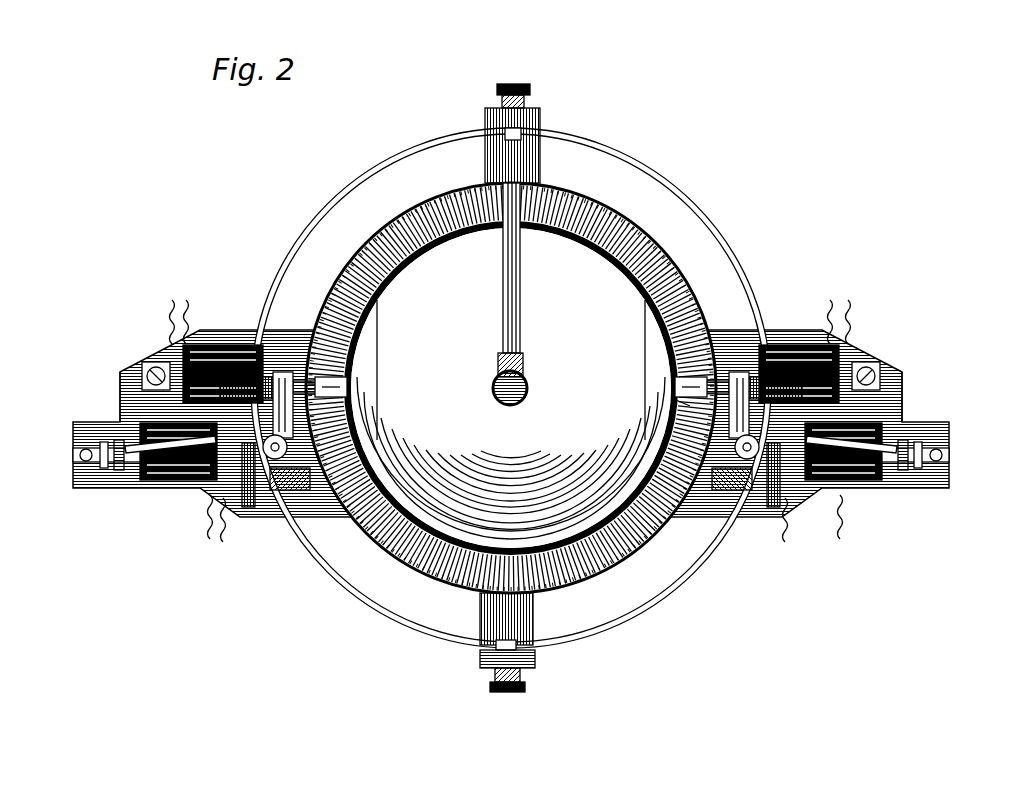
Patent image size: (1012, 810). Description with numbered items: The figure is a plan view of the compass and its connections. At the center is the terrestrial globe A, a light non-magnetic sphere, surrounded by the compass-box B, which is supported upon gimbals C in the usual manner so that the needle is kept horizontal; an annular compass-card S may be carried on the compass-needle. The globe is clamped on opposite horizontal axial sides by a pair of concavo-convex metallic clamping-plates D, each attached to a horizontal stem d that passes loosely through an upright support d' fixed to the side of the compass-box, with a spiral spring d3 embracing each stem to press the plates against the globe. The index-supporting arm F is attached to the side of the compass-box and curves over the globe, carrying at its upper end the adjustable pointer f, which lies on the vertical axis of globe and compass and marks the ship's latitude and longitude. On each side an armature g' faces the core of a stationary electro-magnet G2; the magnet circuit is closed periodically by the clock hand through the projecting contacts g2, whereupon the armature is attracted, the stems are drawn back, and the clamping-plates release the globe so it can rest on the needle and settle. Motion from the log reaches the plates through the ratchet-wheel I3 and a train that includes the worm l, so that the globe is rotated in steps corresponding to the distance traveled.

The terrestrial globe A is at (511, 388).
The compass-box B is at (655, 552).
The gimbals C is at (511, 388).
The clamping-plates D is at (370, 371).
The index-supporting arm F is at (516, 280).
The pointer f is at (528, 388).
The electro-magnet G2 is at (205, 372).
The projecting contacts g2 is at (282, 362).
The armature g' is at (742, 372).
The stems d is at (511, 416).
The upright supports d' is at (531, 412).
The spiral springs d3 is at (840, 352).
The arm a is at (688, 412).
The annular compass-card S is at (640, 512).
The ratchet-wheel I3 is at (200, 492).
The worm l is at (507, 498).